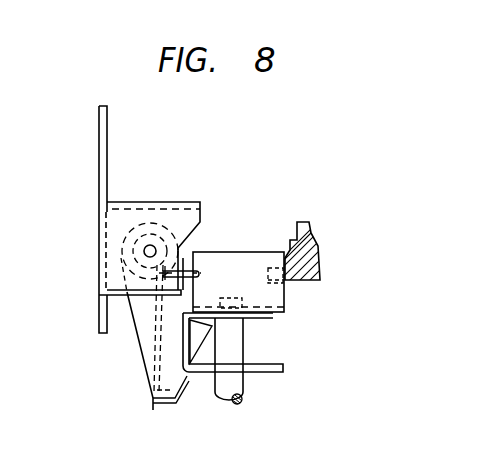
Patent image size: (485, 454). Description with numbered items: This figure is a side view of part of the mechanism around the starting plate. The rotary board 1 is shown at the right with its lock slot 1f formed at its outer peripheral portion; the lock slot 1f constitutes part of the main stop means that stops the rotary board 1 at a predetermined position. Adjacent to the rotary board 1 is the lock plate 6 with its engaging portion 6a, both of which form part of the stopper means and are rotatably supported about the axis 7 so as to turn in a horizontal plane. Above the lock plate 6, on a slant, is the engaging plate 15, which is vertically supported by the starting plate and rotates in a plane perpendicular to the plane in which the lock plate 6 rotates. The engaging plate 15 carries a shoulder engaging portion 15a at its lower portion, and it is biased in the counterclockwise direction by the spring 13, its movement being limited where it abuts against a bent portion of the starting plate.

The rotary board 1 is at (318, 255).
The lock slot 1f is at (286, 292).
The lock plate 6 is at (262, 313).
The engaging portion 6a is at (230, 262).
The axis 7 is at (238, 388).
The spring 13 is at (158, 323).
The engaging plate 15 is at (144, 305).
The shoulder engaging portion 15a is at (205, 343).